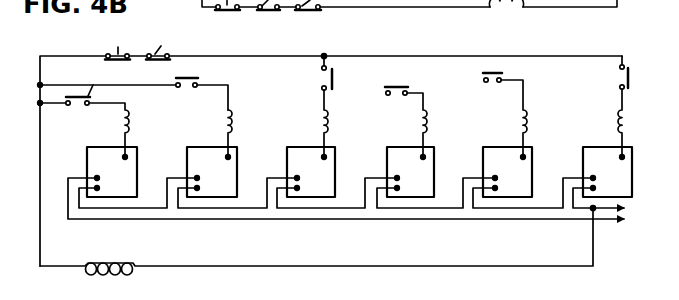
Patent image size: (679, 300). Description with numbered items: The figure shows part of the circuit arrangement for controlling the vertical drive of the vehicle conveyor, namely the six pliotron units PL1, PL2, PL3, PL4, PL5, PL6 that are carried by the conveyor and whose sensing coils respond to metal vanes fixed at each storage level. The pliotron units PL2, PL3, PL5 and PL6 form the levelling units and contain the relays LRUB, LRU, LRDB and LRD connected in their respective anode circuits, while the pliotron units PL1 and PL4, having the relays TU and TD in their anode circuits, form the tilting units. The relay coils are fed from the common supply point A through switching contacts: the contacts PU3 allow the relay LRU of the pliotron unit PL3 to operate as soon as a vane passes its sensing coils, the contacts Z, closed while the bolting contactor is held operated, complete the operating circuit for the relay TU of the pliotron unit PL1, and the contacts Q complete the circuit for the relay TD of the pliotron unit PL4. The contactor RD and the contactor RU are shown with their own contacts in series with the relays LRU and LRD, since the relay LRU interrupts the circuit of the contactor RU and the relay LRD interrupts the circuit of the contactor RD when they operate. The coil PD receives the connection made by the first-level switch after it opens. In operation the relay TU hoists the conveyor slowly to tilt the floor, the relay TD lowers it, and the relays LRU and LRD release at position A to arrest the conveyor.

The position A is at (484, 80).
The contacts PU3 is at (108, 42).
The coil PD is at (164, 42).
The contacts Z is at (79, 83).
The relay TU is at (128, 130).
The relay LRUB is at (265, 133).
The contactor RD is at (344, 72).
The relay LRU is at (349, 123).
The contacts Q is at (396, 79).
The relay TD is at (435, 125).
The contactor RU is at (603, 76).
The relay LRD is at (616, 123).
The relay LRDB is at (528, 131).
The pliotron unit PL1 is at (125, 197).
The pliotron unit PL2 is at (228, 197).
The pliotron unit PL3 is at (327, 195).
The pliotron unit PL4 is at (423, 195).
The pliotron unit PL5 is at (528, 196).
The pliotron unit PL6 is at (618, 190).